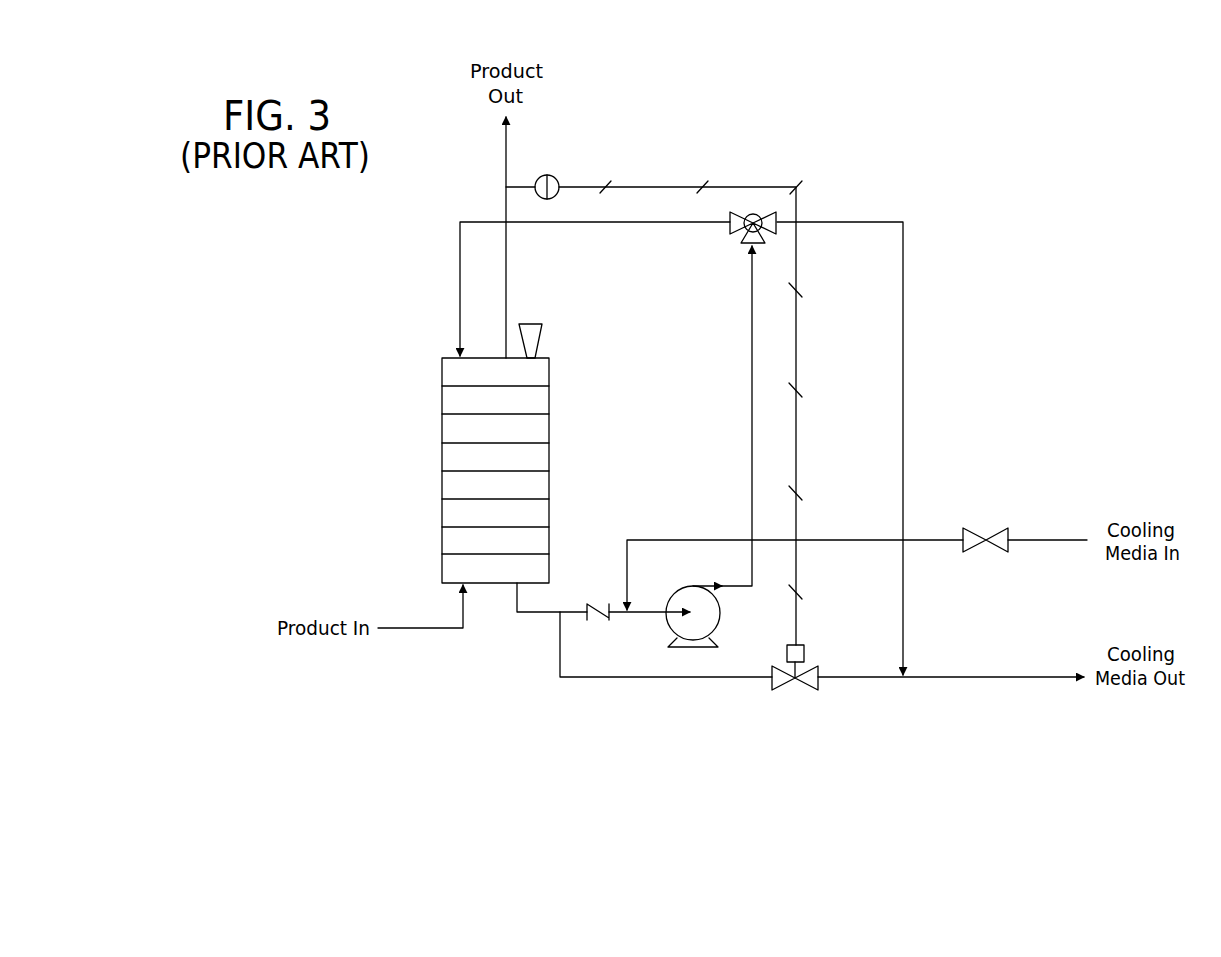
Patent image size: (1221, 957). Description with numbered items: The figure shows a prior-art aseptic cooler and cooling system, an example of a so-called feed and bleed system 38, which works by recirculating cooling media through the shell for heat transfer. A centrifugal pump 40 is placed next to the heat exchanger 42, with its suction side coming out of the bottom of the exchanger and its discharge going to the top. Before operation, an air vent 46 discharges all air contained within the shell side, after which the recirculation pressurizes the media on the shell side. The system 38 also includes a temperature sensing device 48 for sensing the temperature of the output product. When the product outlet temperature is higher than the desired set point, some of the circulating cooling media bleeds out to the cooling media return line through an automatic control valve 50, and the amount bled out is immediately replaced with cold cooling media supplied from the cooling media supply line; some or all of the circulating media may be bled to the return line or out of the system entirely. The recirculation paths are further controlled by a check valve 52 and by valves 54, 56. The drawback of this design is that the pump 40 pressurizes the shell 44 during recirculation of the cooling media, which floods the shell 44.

The system 38 is at (972, 165).
The centrifugal pump 40 is at (693, 635).
The heat exchanger 42 is at (400, 415).
The shell 44 is at (442, 540).
The air vent 46 is at (540, 342).
The temperature sensing device 48 is at (556, 179).
The automatic control valve 50 is at (802, 690).
The check valve 52 is at (596, 622).
The valve 54 is at (757, 212).
The valve 56 is at (993, 530).